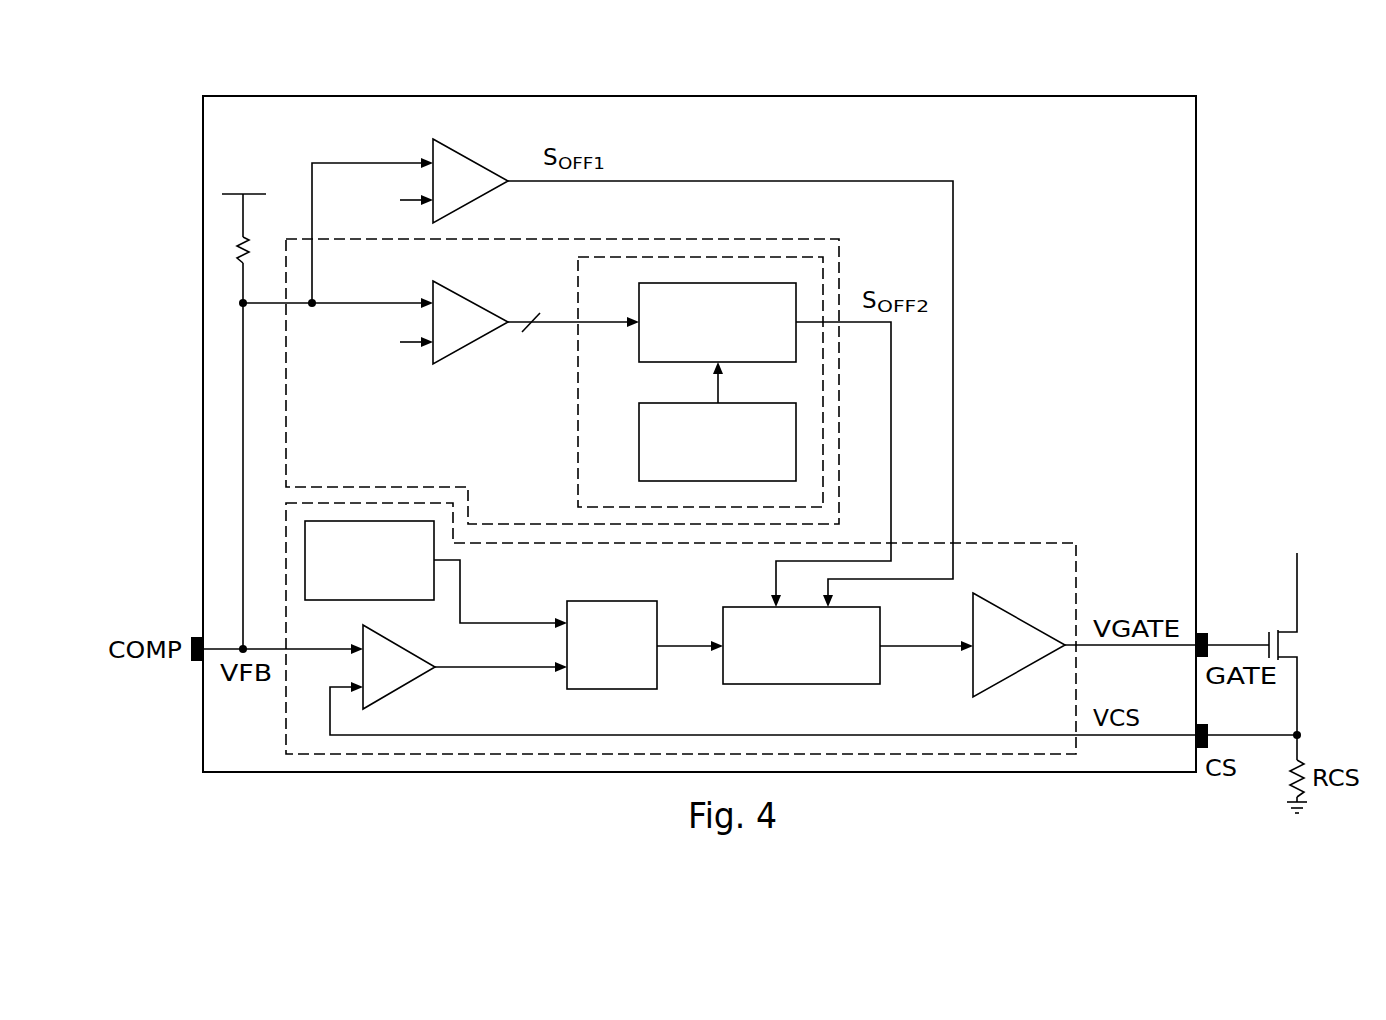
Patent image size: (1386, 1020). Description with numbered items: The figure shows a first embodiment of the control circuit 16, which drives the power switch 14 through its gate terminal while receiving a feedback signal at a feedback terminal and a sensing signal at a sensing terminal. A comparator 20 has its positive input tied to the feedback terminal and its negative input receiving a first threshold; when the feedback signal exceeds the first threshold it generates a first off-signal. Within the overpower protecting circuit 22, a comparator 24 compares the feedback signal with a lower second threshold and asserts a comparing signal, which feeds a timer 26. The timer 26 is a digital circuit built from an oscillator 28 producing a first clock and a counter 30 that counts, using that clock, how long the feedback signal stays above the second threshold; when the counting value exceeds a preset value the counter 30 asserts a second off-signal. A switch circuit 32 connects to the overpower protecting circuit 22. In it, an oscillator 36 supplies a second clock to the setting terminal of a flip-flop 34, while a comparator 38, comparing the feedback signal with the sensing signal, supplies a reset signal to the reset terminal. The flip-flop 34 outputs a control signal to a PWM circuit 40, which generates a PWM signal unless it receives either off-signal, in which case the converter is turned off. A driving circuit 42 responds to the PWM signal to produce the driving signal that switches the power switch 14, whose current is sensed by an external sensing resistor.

The power switch 14 is at (1303, 645).
The control circuit 16 is at (1196, 225).
The comparator 20 is at (470, 158).
The overpower protecting circuit 22 is at (839, 265).
The comparator 24 is at (470, 300).
The timer 26 is at (578, 363).
The oscillator 28 is at (639, 442).
The counter 30 is at (639, 343).
The switch circuit 32 is at (1000, 543).
The flip-flop 34 is at (657, 670).
The oscillator 36 is at (400, 600).
The comparator 38 is at (398, 690).
The pulse width modulation (PWM) circuit 40 is at (880, 665).
The driving circuit 42 is at (1020, 612).